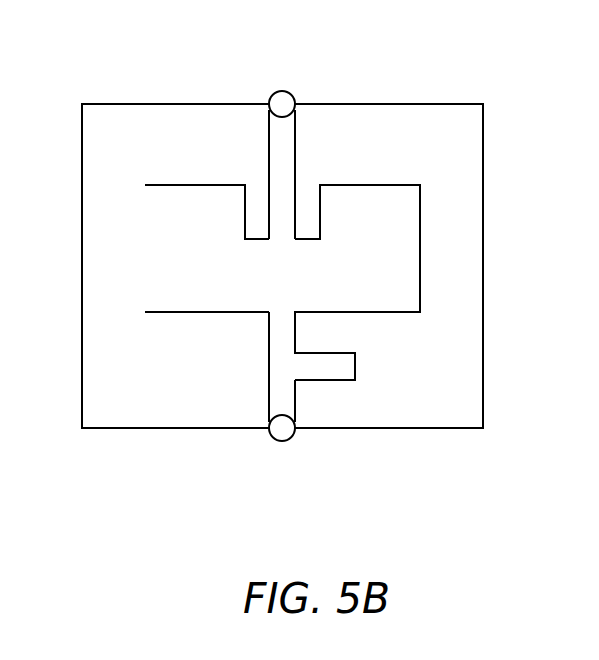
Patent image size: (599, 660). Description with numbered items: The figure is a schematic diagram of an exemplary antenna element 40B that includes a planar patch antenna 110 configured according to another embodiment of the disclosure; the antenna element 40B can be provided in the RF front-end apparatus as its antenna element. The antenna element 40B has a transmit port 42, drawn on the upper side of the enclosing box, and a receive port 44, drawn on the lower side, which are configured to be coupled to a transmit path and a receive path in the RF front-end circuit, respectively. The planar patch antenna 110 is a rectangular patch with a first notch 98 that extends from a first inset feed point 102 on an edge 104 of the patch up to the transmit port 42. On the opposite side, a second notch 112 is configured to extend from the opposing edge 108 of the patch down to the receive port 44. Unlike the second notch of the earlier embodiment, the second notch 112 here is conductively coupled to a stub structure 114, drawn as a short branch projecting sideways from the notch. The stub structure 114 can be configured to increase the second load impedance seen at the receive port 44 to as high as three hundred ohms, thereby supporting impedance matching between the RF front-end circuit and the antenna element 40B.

The antenna element 40B is at (483, 122).
The planar patch antenna 110 is at (145, 267).
The first notch 98 is at (269, 170).
The edge 104 is at (176, 185).
The first inset feed point 102 is at (301, 238).
The opposing edge 108 is at (186, 313).
The second notch 112 is at (269, 400).
The stub structure 114 is at (355, 362).
The transmit port 42 is at (282, 91).
The receive port 44 is at (283, 441).